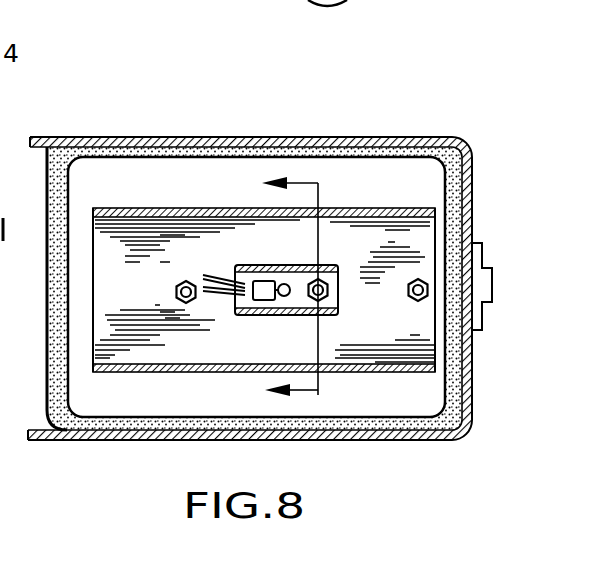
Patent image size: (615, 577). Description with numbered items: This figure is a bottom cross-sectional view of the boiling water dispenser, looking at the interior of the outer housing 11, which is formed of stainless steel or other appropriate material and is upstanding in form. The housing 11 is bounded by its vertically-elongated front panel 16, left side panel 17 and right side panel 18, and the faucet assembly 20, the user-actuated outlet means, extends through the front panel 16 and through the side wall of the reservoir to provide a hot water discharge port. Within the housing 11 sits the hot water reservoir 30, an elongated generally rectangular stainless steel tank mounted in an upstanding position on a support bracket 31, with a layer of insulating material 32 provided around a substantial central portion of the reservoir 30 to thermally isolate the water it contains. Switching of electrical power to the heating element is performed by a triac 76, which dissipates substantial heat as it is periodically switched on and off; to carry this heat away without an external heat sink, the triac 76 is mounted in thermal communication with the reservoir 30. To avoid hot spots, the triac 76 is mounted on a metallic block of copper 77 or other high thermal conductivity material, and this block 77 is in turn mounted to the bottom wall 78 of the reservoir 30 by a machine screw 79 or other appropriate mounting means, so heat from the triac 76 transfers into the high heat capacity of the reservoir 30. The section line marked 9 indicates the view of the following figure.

The outer housing 11 is at (256, 126).
The front panel 16 is at (472, 405).
The left side panel 17 is at (330, 440).
The right side panel 18 is at (320, 137).
The faucet assembly 20 is at (480, 248).
The hot water reservoir 30 is at (123, 178).
The support bracket 31 is at (192, 212).
The layer of insulating material 32 is at (388, 150).
The triac 76 is at (267, 300).
The metallic block of copper 77 is at (303, 291).
The bottom wall 78 is at (130, 392).
The machine screw 79 is at (333, 292).
The section line of FIG. 9 is at (310, 289).